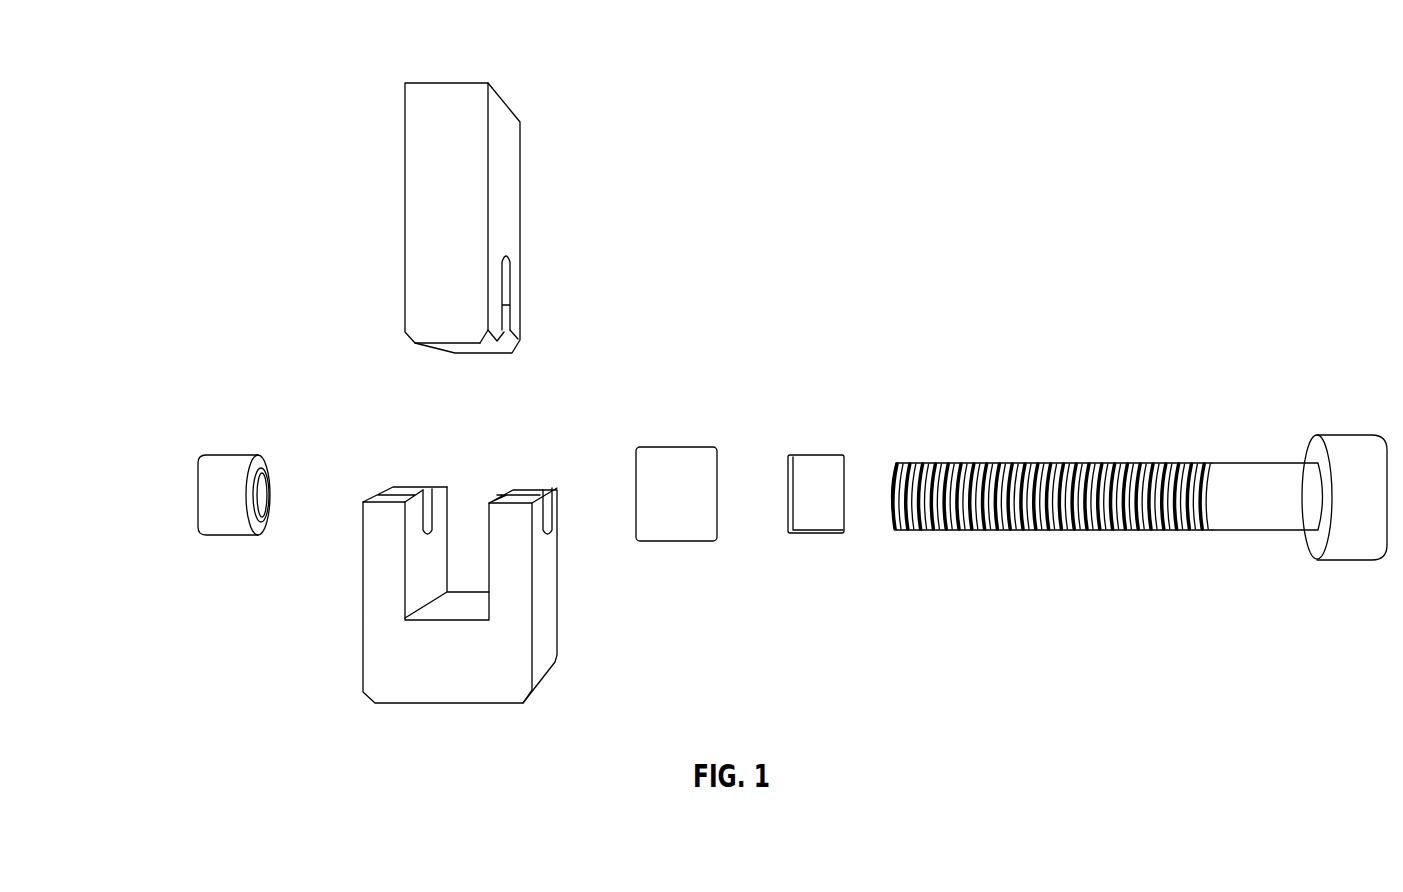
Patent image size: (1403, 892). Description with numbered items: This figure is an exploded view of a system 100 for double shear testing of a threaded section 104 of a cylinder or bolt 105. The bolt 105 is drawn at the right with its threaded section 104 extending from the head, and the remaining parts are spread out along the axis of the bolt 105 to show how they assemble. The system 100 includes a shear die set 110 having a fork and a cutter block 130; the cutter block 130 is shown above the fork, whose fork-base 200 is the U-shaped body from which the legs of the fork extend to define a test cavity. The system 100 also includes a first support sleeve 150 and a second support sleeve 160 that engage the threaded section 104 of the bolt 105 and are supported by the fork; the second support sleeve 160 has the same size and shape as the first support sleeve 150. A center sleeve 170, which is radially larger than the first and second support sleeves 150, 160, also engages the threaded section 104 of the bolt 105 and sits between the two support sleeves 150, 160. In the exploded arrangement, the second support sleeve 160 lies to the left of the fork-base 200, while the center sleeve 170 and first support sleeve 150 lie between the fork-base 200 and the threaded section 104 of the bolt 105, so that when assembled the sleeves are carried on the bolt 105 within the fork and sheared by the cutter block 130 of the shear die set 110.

The system 100 is at (1144, 112).
The shear die set 110 is at (595, 356).
The cutter block 130 is at (505, 167).
The fork-base 200 is at (375, 648).
The second support sleeve 160 is at (198, 502).
The center sleeve 170 is at (682, 530).
The first support sleeve 150 is at (822, 520).
The threaded section 104 is at (1003, 473).
The bolt 105 is at (1240, 463).